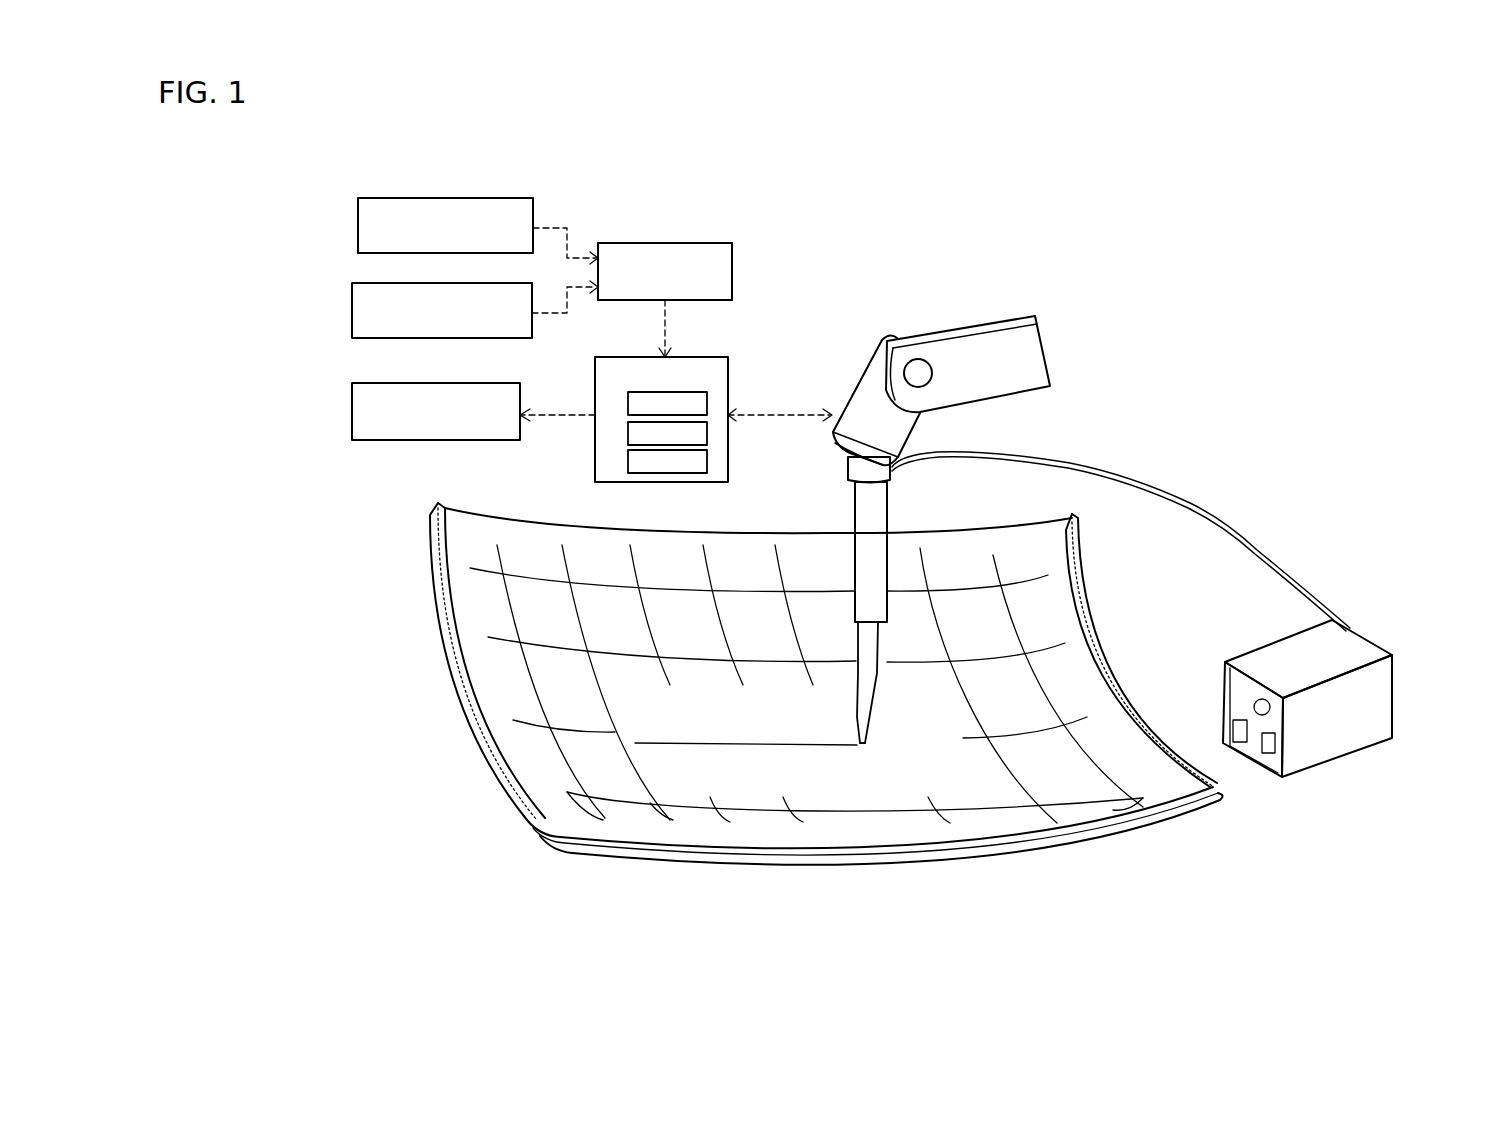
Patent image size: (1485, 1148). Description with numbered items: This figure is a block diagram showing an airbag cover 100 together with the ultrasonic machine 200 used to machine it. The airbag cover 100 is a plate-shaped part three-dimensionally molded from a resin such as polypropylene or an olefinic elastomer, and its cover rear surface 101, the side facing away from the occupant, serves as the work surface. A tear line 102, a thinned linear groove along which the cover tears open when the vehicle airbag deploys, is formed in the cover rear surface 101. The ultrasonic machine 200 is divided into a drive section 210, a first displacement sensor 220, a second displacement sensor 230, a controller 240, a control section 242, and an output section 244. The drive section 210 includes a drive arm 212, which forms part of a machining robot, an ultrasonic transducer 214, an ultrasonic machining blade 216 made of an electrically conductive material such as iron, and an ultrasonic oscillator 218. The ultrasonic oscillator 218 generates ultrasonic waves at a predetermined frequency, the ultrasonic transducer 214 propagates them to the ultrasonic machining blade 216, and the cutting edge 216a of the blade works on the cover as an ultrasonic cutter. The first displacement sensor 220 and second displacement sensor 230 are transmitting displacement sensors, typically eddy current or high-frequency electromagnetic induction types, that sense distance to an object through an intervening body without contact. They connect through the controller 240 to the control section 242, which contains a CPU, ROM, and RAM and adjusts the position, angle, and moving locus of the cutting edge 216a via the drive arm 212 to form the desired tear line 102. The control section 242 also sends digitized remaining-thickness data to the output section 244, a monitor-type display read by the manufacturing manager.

The airbag cover 100 is at (778, 726).
The cover rear surface 101 is at (458, 550).
The tear line 102 is at (648, 762).
The ultrasonic machine 200 is at (1100, 584).
The drive section 210 is at (1073, 427).
The drive arm 212 is at (930, 337).
The ultrasonic transducer 214 is at (870, 557).
The ultrasonic machining blade 216 is at (865, 693).
The cutting edge 216a is at (853, 750).
The ultrasonic oscillator 218 is at (1330, 748).
The first displacement sensor 220 is at (358, 225).
The second displacement sensor 230 is at (352, 312).
The controller 240 is at (732, 268).
The control section 242 is at (728, 378).
The output section 244 is at (352, 409).